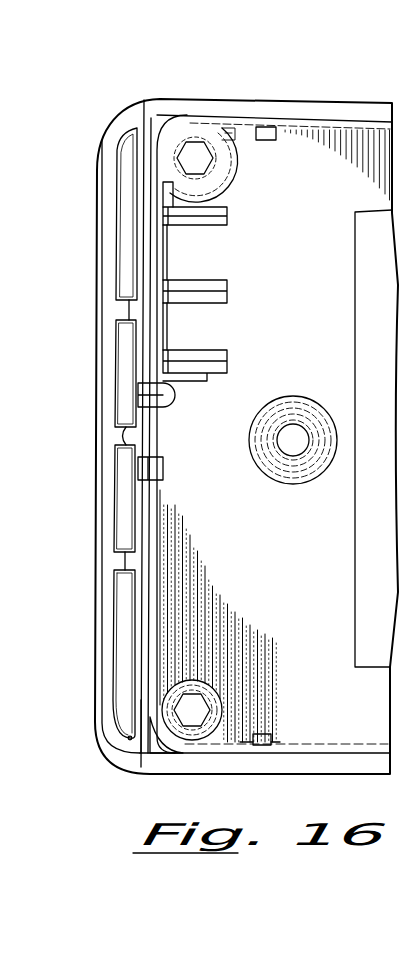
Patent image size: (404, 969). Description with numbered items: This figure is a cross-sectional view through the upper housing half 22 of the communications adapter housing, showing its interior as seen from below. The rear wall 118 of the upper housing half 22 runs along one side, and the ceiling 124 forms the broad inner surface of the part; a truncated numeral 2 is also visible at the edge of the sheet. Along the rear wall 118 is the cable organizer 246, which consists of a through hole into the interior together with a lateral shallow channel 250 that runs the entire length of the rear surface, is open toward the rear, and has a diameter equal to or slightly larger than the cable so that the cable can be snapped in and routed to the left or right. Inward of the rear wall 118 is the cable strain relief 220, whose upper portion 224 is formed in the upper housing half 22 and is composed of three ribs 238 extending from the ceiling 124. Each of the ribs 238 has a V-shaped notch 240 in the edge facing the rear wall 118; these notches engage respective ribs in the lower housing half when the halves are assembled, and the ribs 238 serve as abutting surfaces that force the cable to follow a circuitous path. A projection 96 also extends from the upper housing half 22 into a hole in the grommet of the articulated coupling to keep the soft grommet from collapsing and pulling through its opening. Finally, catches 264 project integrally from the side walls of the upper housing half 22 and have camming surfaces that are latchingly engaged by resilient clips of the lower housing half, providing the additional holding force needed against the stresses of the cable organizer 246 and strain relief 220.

The upper housing half 22 is at (233, 88).
The partial numeral (cut off at sheet edge) 2 is at (8, 159).
The projection 96 is at (293, 396).
The rear wall 118 is at (97, 511).
The ceiling 124 is at (290, 568).
The cable strain relief 220 is at (274, 205).
The upper portion 224 is at (199, 372).
The ribs 238 is at (213, 222).
The V-shaped notch 240 is at (167, 363).
The cable organizer 246 is at (100, 158).
The shallow channel 250 is at (138, 672).
The catches 264 is at (272, 138).